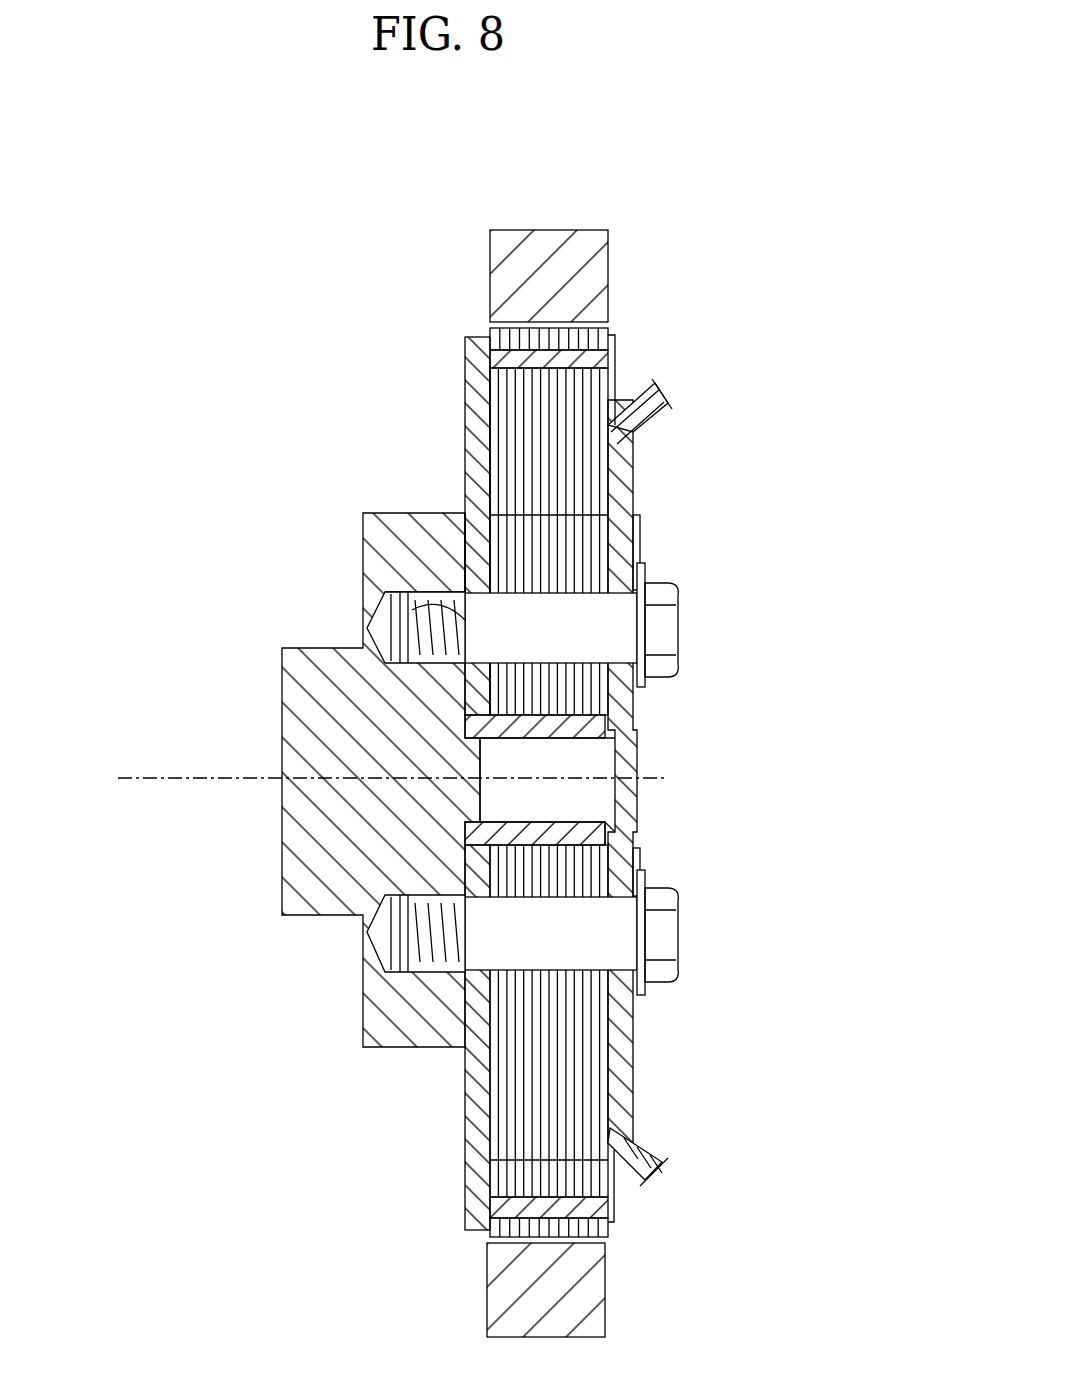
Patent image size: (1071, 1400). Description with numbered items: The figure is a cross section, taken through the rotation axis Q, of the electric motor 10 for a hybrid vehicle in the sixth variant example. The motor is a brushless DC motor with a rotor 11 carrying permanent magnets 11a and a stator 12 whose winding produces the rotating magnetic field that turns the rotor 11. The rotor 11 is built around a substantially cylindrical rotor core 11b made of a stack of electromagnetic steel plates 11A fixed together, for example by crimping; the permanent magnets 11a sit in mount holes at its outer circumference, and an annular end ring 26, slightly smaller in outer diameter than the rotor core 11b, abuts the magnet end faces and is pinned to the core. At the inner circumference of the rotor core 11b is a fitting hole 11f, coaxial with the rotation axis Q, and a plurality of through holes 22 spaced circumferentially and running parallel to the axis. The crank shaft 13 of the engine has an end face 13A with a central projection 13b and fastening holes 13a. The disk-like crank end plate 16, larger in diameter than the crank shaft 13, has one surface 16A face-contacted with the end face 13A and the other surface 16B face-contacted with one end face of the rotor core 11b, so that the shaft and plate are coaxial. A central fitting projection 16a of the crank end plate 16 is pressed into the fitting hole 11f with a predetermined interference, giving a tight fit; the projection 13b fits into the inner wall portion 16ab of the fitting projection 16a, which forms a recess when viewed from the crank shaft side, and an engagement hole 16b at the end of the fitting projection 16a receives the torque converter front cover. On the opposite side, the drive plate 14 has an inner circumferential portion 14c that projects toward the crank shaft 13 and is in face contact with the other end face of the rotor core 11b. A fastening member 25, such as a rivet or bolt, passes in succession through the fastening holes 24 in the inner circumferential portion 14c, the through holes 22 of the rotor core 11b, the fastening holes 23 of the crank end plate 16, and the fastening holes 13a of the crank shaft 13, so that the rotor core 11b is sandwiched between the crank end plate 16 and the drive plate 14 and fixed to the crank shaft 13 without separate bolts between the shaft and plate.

The electric motor 10 is at (262, 185).
The rotor 11 is at (482, 320).
The permanent magnets 11a is at (495, 345).
The electromagnetic steel plates 11A is at (608, 1225).
The rotor core 11b is at (604, 1243).
The fitting hole 11f is at (560, 742).
The stator 12 is at (512, 233).
The crank shaft 13 is at (283, 722).
The end face 13A is at (470, 520).
The fastening holes 13a is at (425, 598).
The projection 13b is at (480, 770).
The drive plate 14 is at (648, 482).
The inner circumferential portion 14c is at (635, 457).
The crank end plate 16 is at (465, 378).
The one surface 16A is at (466, 455).
The other surface 16B is at (505, 535).
The fitting projection 16a is at (505, 842).
The engagement hole 16b is at (632, 792).
The inner wall portion 16ab is at (632, 826).
The through holes 22 is at (637, 555).
The fastening holes 23 is at (372, 627).
The fastening holes 24 is at (641, 615).
The fastening member 25 is at (667, 637).
The end ring 26 is at (615, 380).
The rotation axis Q is at (150, 778).